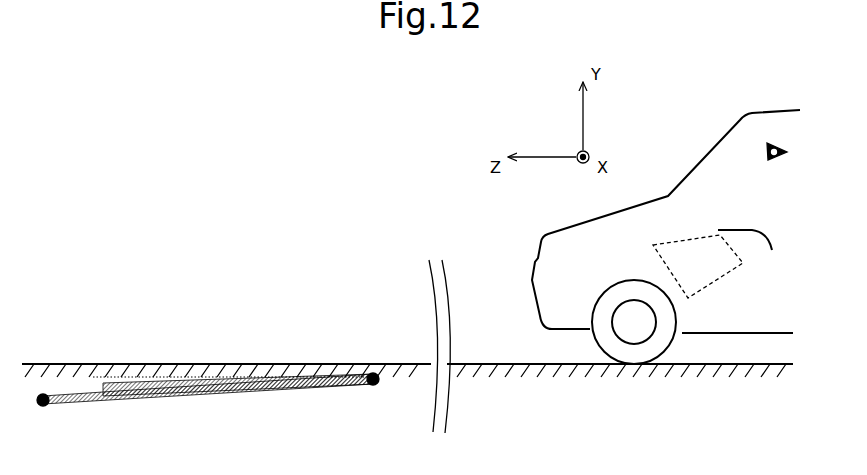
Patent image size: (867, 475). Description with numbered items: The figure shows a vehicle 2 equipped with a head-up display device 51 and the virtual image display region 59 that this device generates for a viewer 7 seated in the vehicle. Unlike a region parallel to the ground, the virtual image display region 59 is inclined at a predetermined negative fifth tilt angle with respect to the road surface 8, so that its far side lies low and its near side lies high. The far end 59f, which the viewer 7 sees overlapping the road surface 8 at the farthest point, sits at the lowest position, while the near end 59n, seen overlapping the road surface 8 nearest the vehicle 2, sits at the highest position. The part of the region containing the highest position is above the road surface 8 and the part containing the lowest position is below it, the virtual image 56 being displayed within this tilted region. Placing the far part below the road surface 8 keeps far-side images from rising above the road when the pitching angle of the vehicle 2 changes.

The vehicle 2 is at (532, 282).
The viewer 7 is at (786, 152).
The road surface 8 is at (275, 363).
The head-up display device (HUD) 51 is at (745, 264).
The virtual image 56 is at (173, 381).
The virtual image display region 59 is at (85, 393).
The far end 59f is at (48, 407).
The near end 59n is at (372, 377).